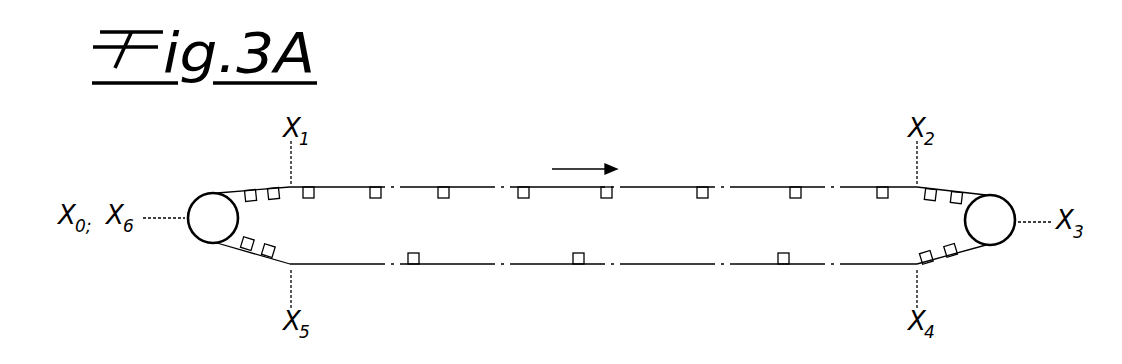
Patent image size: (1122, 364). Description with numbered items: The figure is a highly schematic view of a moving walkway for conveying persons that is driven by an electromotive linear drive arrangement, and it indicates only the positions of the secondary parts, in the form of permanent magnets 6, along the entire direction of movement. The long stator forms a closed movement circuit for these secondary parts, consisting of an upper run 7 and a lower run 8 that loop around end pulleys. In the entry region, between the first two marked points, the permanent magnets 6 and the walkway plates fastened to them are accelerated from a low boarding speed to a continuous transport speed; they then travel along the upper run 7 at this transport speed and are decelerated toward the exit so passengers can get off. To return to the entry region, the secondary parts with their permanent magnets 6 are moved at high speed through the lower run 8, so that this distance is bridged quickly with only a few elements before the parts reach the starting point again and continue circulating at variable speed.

The permanent magnets 6 is at (376, 186).
The upper run 7 is at (765, 187).
The lower run 8 is at (757, 272).